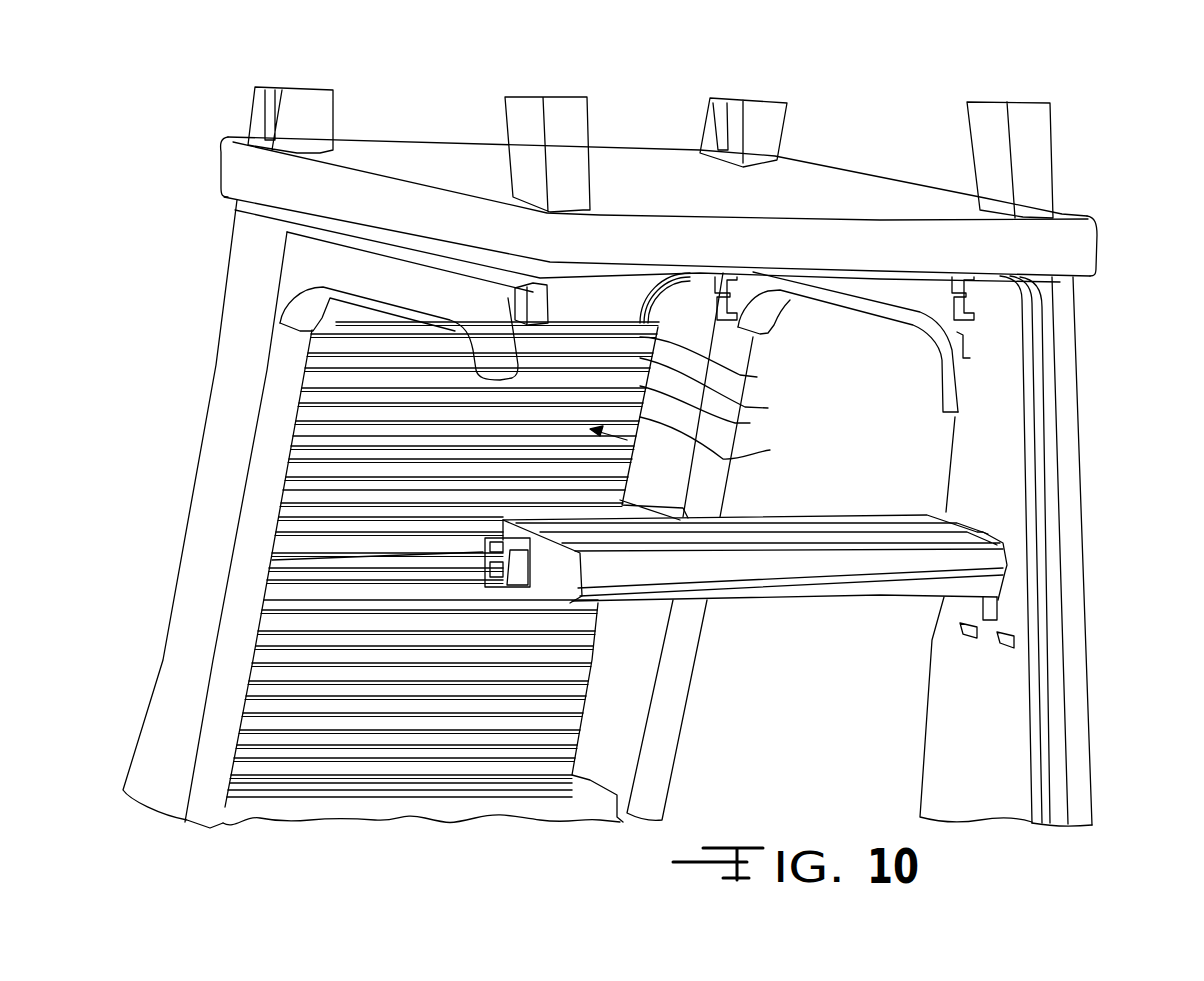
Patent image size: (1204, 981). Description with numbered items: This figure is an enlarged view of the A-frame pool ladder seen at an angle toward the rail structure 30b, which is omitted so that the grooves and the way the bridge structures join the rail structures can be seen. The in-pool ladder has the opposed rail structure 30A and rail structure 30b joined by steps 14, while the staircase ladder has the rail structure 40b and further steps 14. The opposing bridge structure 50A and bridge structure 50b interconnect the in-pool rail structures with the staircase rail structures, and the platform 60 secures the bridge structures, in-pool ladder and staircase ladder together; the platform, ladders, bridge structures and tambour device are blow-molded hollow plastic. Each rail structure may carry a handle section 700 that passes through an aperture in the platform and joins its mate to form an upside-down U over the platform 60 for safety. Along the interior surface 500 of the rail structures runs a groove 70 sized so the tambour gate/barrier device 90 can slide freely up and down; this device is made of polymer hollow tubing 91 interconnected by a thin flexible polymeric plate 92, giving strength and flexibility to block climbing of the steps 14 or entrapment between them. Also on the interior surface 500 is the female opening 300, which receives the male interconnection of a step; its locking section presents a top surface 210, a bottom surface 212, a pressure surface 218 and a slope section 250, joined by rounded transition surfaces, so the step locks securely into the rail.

The platform 60 is at (810, 187).
The handle section 700 is at (1038, 168).
The bridge structure 50A is at (407, 294).
The rail structure 30A is at (270, 324).
The groove 70 is at (652, 303).
The bridge structure 50b is at (882, 290).
The polymer hollow tubing 91 is at (720, 368).
The flexible polymeric plate 92 is at (716, 391).
The tambour gate/barrier device 90 is at (704, 439).
The steps 14 is at (690, 490).
The rail structure 30b is at (684, 479).
The rail structure 40b is at (1017, 416).
The interior surface 500 is at (995, 438).
The female opening 300 is at (1005, 572).
The top surface 210 is at (503, 535).
The bottom surface 212 is at (517, 572).
The pressure surface 218 is at (487, 562).
The slope section 250 is at (493, 582).